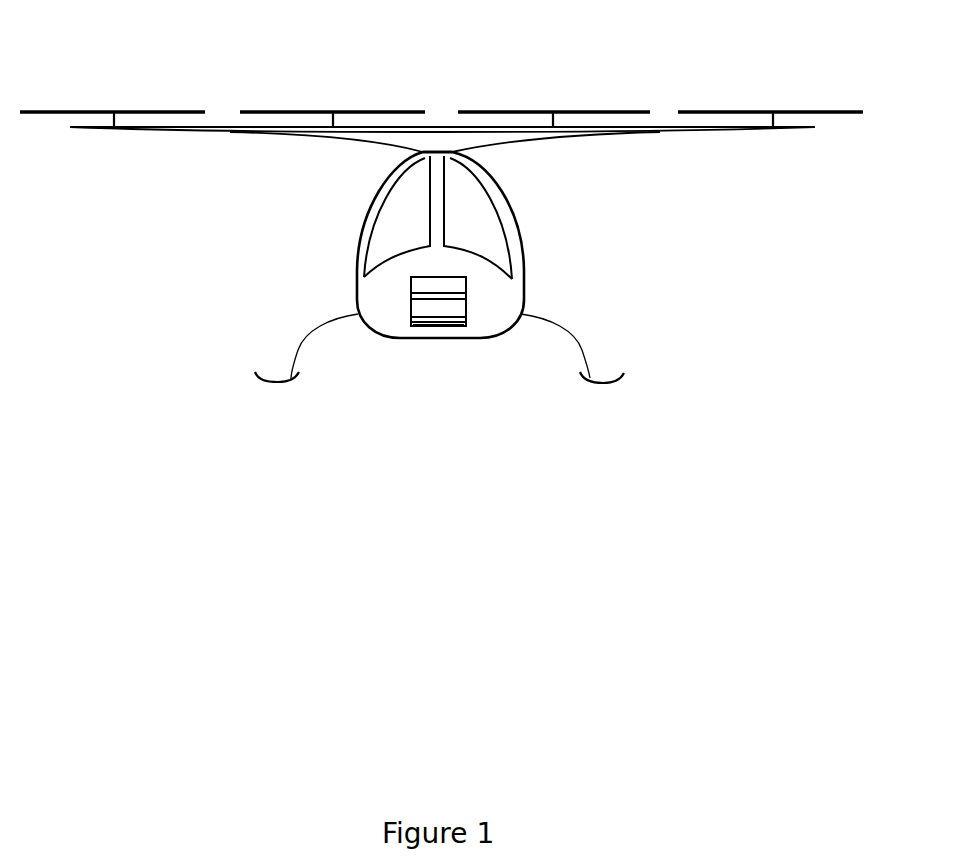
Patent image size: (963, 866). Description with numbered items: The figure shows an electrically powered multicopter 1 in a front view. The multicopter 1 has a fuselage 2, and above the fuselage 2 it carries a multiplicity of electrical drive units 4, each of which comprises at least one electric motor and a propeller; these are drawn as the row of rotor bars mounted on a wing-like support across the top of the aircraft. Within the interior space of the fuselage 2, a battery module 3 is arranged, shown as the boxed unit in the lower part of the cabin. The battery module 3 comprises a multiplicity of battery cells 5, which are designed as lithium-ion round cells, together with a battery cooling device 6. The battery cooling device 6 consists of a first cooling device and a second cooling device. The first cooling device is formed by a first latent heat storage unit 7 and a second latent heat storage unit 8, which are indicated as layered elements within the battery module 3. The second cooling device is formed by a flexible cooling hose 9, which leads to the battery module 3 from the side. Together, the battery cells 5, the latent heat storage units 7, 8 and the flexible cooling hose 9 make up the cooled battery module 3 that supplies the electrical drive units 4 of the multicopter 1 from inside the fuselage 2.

The electrically powered multicopter 1 is at (115, 60).
The fuselage 2 is at (355, 295).
The battery module 3 is at (469, 268).
The electrical drive units 4 is at (598, 108).
The battery cells 5 is at (466, 310).
The battery cooling device 6 is at (386, 312).
The first latent heat storage unit 7 is at (466, 297).
The second latent heat storage unit 8 is at (428, 327).
The flexible cooling hose 9 is at (411, 288).